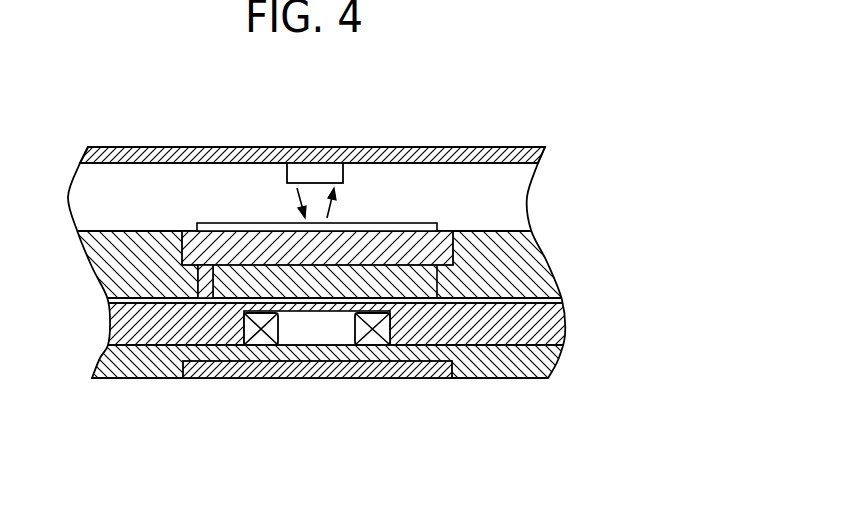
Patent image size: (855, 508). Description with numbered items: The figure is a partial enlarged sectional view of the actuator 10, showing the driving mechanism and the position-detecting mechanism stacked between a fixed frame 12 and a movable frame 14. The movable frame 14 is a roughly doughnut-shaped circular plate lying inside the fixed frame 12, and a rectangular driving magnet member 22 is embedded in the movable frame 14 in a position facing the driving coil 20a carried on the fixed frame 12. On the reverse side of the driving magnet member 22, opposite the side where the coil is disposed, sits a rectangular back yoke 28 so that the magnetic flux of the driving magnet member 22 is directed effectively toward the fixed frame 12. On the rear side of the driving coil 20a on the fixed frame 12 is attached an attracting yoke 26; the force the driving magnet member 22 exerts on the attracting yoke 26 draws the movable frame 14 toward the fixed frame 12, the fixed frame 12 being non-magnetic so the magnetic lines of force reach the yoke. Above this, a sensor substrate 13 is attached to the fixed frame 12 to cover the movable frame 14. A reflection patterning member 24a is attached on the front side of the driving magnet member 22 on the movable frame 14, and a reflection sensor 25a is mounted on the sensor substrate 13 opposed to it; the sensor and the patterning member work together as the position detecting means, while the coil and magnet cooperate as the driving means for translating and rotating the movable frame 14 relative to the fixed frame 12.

The actuator 10 is at (605, 232).
The fixed frame 12 is at (505, 353).
The sensor substrate 13 is at (108, 148).
The movable frame 14 is at (490, 252).
The driving coil 20a is at (263, 343).
The driving magnet member 22 is at (207, 282).
The reflection patterning member 24a is at (252, 223).
The reflection sensor 25a is at (317, 176).
The attracting yoke 26 is at (304, 377).
The back yoke 28 is at (404, 250).